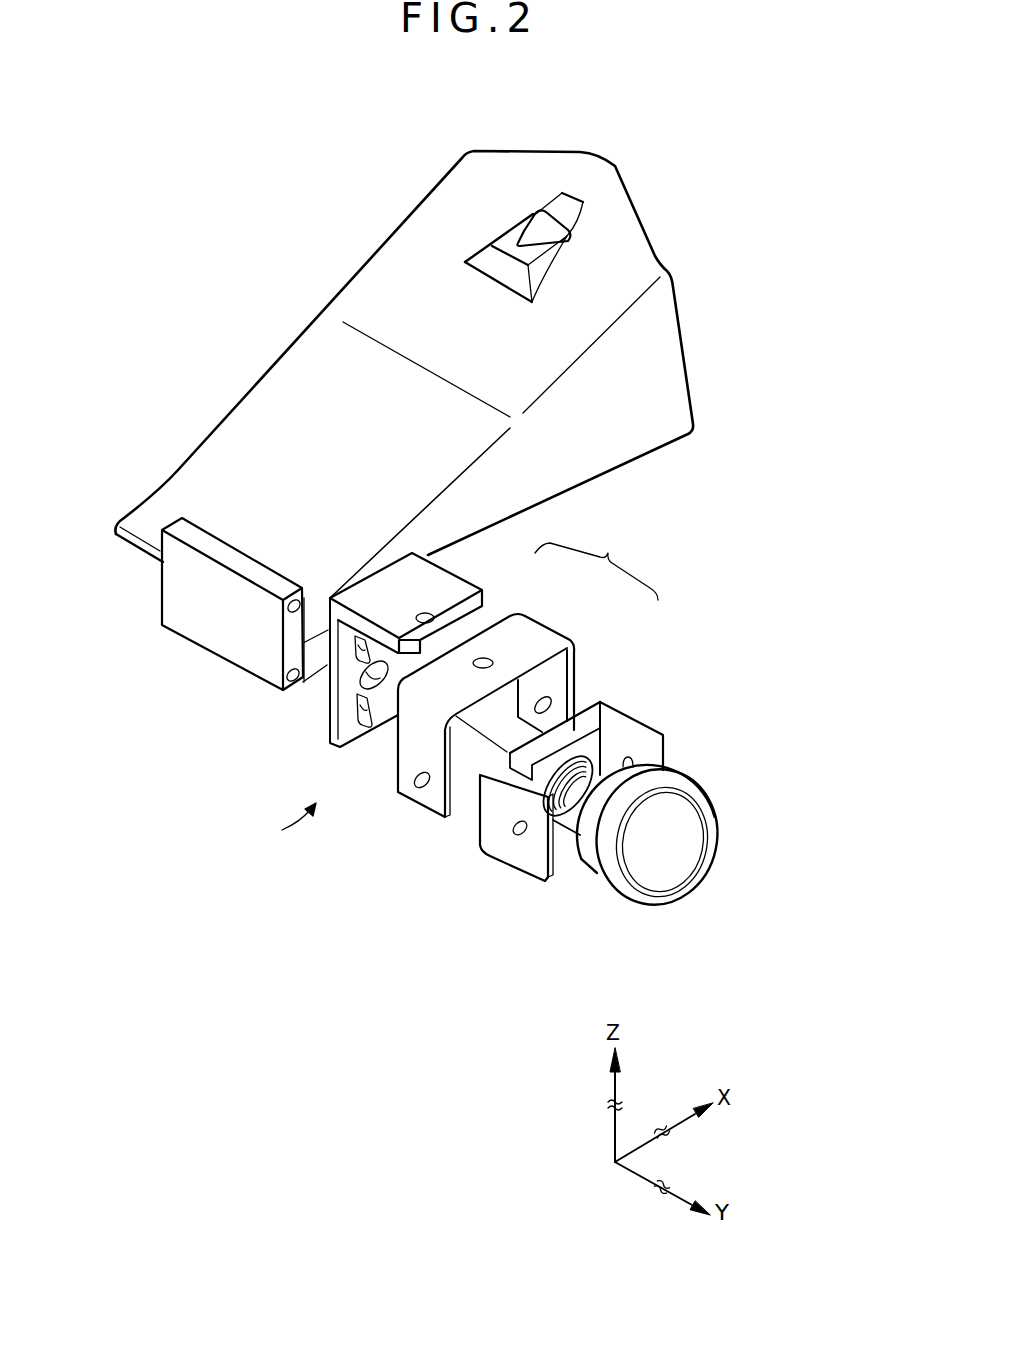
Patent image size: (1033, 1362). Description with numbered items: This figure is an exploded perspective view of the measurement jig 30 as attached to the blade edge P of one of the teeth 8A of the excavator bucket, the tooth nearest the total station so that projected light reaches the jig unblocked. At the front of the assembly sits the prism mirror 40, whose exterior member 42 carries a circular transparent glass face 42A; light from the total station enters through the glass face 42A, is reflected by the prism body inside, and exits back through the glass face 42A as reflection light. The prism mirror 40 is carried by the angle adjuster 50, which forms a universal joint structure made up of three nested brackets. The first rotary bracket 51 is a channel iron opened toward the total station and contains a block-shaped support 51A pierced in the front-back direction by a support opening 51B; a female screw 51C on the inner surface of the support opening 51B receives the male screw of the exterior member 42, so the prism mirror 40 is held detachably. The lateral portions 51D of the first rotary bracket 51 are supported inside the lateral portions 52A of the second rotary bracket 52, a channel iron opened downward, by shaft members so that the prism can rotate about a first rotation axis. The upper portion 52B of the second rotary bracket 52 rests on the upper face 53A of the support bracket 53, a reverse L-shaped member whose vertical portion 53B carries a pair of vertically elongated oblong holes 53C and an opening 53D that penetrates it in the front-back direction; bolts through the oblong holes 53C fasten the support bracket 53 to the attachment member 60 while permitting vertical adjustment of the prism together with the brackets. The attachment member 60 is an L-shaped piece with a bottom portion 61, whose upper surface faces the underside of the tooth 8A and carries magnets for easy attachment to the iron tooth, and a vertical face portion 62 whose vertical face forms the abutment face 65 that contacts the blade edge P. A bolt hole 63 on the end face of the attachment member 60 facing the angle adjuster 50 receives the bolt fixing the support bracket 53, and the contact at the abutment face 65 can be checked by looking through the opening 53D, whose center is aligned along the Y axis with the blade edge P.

The tooth 8A is at (316, 360).
The blade edge P is at (152, 546).
The measurement jig 30 is at (283, 829).
The prism mirror 40 is at (668, 849).
The exterior member 42 is at (610, 880).
The glass face 42A is at (680, 865).
The angle adjuster 50 is at (596, 566).
The first rotary bracket 51 is at (578, 735).
The support 51A is at (598, 742).
The support opening 51B is at (598, 767).
The female screw 51C is at (627, 758).
The lateral portions 51D is at (488, 826).
The second rotary bracket 52 is at (480, 697).
The lateral portions 52A is at (408, 760).
The upper portion 52B is at (504, 636).
The support bracket 53 is at (385, 644).
The upper face 53A is at (420, 563).
The vertical portion 53B is at (303, 701).
The oblong holes 53C is at (357, 657).
The opening 53D is at (366, 684).
The attachment member 60 is at (232, 622).
The bottom portion 61 is at (328, 667).
The vertical face portion 62 is at (198, 625).
The bolt hole 63 is at (295, 603).
The abutment face 65 is at (308, 608).